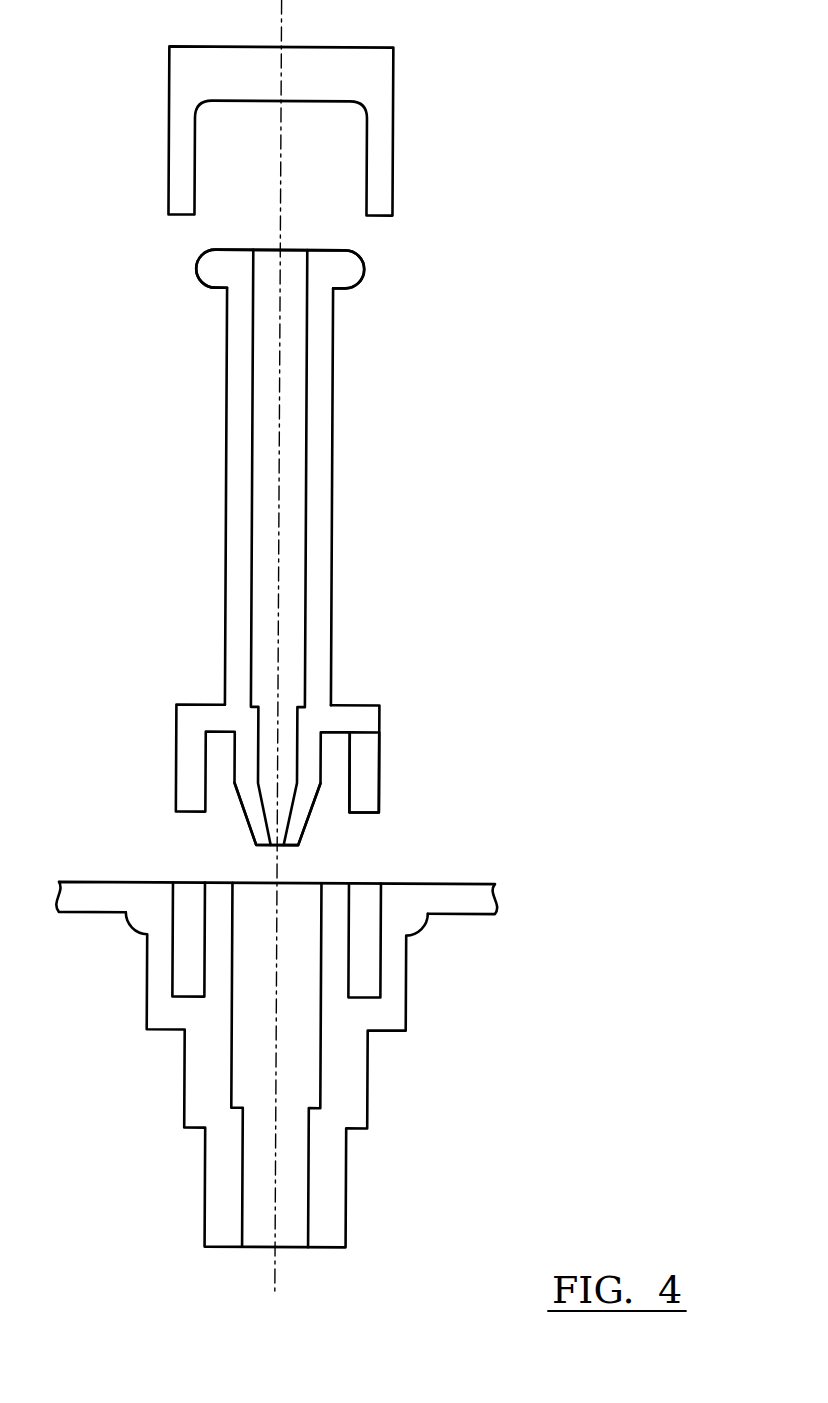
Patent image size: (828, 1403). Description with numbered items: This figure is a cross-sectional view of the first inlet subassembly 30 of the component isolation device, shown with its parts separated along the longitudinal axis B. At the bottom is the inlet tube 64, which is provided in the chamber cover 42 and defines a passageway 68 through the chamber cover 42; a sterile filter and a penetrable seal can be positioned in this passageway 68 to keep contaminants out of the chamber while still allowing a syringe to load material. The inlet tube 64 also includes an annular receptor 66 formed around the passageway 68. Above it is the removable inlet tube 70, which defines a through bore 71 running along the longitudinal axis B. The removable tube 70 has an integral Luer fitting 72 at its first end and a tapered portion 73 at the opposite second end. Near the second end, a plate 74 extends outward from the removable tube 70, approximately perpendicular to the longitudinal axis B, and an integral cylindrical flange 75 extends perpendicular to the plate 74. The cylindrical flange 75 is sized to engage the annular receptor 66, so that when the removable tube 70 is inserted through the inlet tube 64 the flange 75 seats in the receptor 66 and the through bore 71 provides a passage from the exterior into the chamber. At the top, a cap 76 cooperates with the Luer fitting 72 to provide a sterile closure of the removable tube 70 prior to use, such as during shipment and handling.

The first inlet subassembly 30 is at (251, 281).
The chamber cover 42 is at (186, 884).
The inlet tube 64 is at (136, 1067).
The annular receptor 66 is at (276, 914).
The passageway 68 is at (229, 1038).
The removable inlet tube 70 is at (320, 478).
The through bore 71 is at (243, 547).
The Luer fitting 72 is at (321, 253).
The tapered portion 73 is at (330, 819).
The plate 74 is at (308, 753).
The cylindrical flange 75 is at (405, 769).
The cap 76 is at (327, 131).
The longitudinal axis B is at (326, 1296).